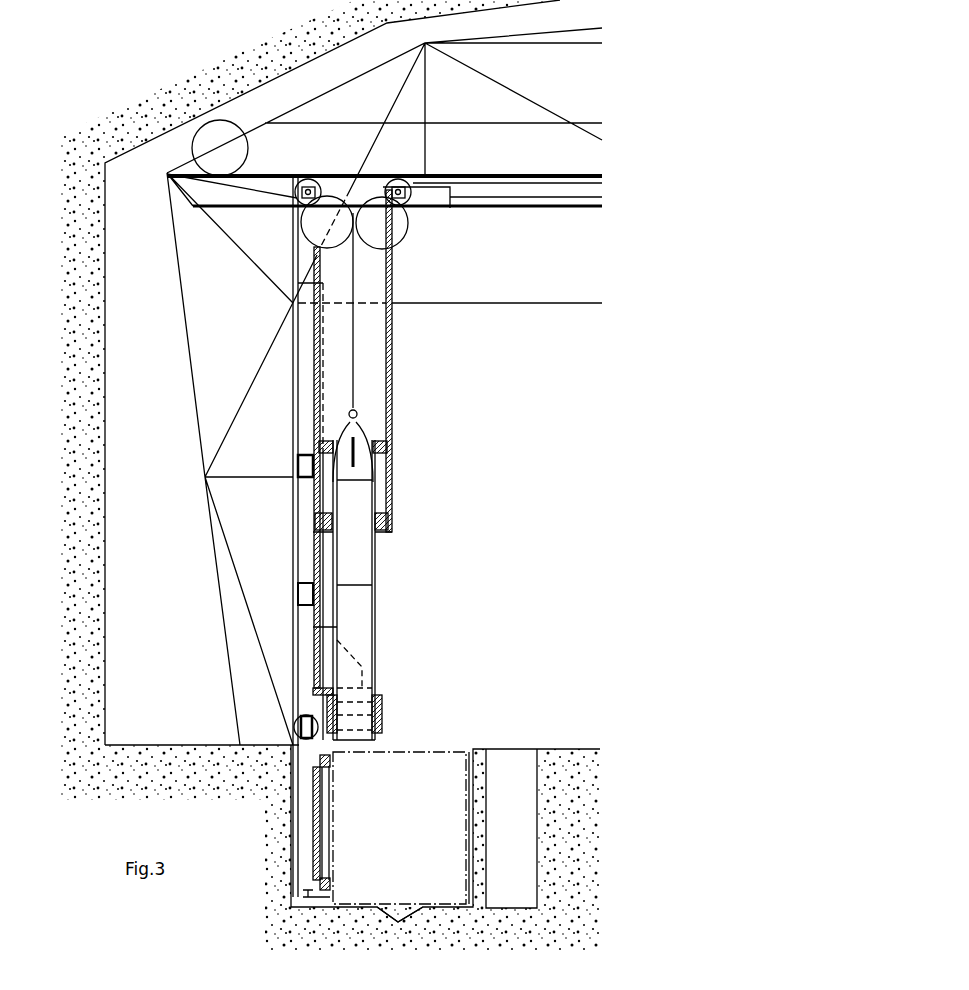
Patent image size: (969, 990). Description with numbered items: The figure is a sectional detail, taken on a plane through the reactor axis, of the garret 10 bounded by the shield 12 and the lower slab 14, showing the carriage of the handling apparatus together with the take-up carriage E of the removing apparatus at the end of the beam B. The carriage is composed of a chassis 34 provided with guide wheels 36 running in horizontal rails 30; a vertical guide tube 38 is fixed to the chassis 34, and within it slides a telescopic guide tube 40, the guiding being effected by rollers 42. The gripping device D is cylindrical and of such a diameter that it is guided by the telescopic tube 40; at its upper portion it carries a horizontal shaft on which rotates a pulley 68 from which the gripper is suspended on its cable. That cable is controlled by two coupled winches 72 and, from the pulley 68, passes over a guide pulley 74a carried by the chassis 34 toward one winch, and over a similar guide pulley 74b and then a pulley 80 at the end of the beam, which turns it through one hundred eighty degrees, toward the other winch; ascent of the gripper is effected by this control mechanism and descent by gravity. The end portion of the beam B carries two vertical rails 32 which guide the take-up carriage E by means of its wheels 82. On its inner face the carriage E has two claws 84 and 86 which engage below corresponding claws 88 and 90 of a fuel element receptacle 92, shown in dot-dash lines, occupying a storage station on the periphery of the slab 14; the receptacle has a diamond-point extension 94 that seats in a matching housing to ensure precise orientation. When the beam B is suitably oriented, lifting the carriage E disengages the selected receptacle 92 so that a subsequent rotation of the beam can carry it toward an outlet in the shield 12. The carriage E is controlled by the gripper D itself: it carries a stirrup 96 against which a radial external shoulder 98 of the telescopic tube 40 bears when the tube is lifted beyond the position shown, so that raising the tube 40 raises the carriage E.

The garret 10 is at (588, 424).
The shield 12 is at (190, 32).
The lower slab 14 is at (637, 889).
The horizontal rails 30 is at (515, 185).
The vertical rails 32 is at (305, 365).
The chassis 34 is at (450, 208).
The guide wheels 36 is at (308, 180).
The vertical guide tube 38 is at (392, 388).
The telescopic guide tube 40 is at (375, 566).
The rollers 42 is at (386, 446).
The pulley 68 is at (356, 462).
The winches 72 is at (557, 210).
The guide pulley 74a is at (407, 228).
The guide pulley 74b is at (302, 222).
The pulley 80 is at (193, 148).
The wheels 82 is at (297, 467).
The claw 84 is at (331, 770).
The claw 86 is at (331, 893).
The claw 88 is at (332, 757).
The claw 90 is at (331, 883).
The receptacle 92 is at (427, 827).
The extension 94 is at (400, 908).
The stirrup 96 is at (313, 659).
The radial external shoulder 98 is at (381, 693).
The beam B is at (566, 100).
The gripping device D is at (362, 622).
The take-up carriage E is at (302, 566).